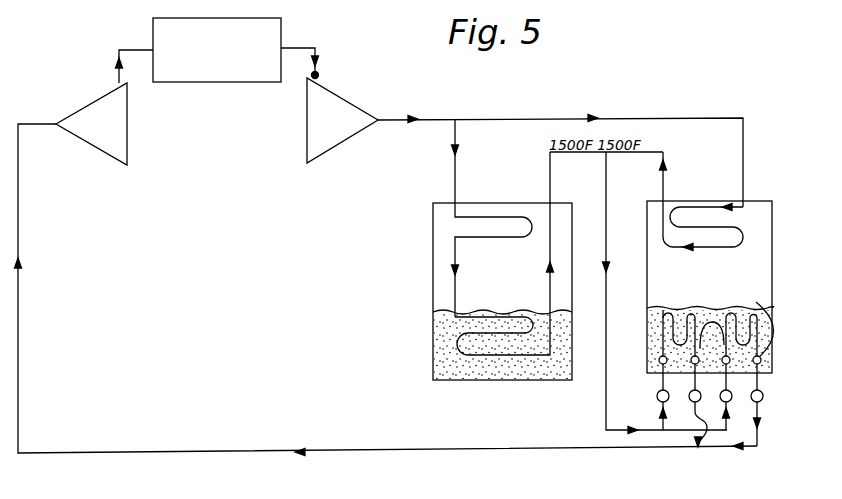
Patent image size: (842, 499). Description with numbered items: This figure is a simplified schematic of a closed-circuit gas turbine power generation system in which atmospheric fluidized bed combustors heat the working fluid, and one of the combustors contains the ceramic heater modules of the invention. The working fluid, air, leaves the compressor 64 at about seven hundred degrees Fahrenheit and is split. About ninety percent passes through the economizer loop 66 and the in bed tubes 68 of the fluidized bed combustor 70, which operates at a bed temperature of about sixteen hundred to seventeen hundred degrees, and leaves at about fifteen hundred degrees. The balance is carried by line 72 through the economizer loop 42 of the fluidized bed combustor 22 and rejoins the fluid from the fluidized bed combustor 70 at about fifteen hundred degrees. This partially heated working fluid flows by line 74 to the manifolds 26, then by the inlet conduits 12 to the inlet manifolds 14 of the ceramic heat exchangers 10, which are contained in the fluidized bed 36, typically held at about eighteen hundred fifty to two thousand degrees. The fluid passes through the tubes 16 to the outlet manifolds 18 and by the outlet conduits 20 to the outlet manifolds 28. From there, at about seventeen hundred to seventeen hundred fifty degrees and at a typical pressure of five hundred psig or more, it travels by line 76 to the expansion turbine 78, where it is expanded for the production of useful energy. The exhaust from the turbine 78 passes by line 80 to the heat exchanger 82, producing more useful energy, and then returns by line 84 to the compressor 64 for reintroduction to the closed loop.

The ceramic heat exchangers 10 is at (663, 304).
The inlet conduits 12 is at (660, 381).
The inlet manifolds 14 is at (658, 360).
The tubes 16 is at (730, 379).
The outlet manifolds 18 is at (757, 303).
The outlet conduits 20 is at (760, 392).
The fluidized bed combustor 22 is at (777, 262).
The manifolds 26 is at (657, 400).
The outlet manifolds 28 is at (761, 414).
The fluidized bed 36 is at (716, 310).
The economizer loop 42 is at (690, 207).
The compressor 64 is at (338, 113).
The economizer loop 66 is at (475, 212).
The in bed tubes 68 is at (494, 318).
The fluidized bed combustor 70 is at (433, 262).
The line 72 is at (680, 118).
The line 74 is at (606, 232).
The line 76 is at (554, 452).
The expansion turbine 78 is at (95, 138).
The line 80 is at (134, 47).
The heat exchanger 82 is at (268, 19).
The line 84 is at (317, 75).